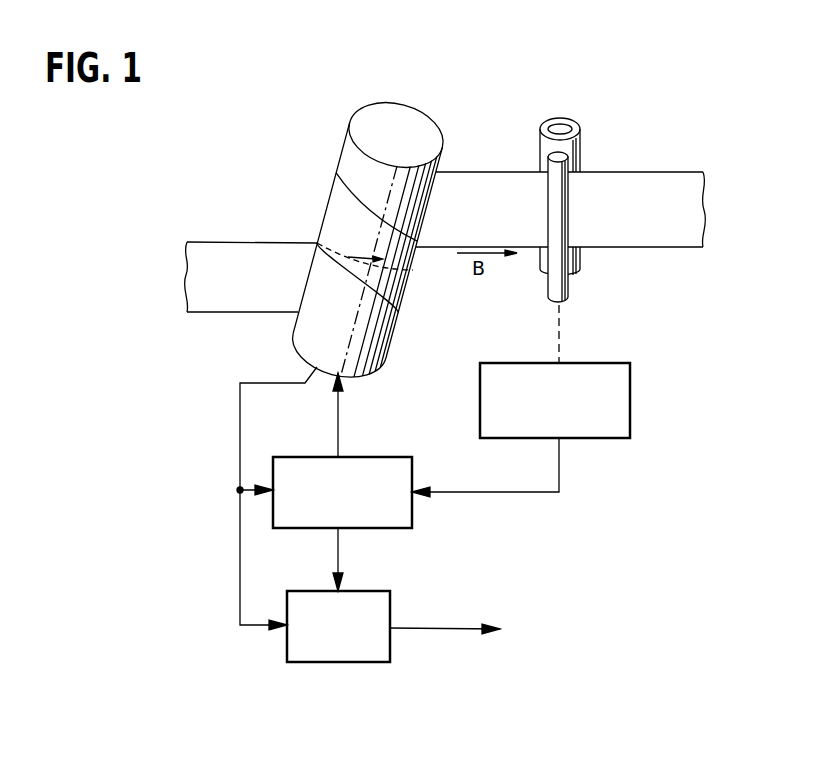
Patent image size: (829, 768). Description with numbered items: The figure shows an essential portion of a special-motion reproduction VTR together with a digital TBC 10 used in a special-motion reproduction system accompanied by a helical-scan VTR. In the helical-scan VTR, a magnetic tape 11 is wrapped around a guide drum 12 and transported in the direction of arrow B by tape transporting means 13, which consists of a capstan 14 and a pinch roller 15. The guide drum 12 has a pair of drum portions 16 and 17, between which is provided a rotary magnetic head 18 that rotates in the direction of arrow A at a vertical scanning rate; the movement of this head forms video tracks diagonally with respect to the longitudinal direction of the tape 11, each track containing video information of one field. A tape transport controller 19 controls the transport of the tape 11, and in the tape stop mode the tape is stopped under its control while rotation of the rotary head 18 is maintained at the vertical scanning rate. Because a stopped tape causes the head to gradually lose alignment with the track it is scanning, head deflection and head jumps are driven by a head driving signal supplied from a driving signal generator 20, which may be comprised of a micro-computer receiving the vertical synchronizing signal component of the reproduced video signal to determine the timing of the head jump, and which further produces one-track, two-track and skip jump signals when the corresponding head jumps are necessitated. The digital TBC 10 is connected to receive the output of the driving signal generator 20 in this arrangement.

The digital TBC 10 is at (393, 602).
The magnetic tape 11 is at (645, 172).
The guide drum 12 is at (353, 82).
The tape transporting means 13 is at (587, 113).
The capstan 14 is at (568, 293).
The pinch roller 15 is at (582, 140).
The drum portion 16 is at (408, 118).
The drum portion 17 is at (392, 344).
The rotary magnetic head 18 is at (413, 272).
The tape transport controller 19 is at (630, 400).
The driving signal generator 20 is at (412, 470).